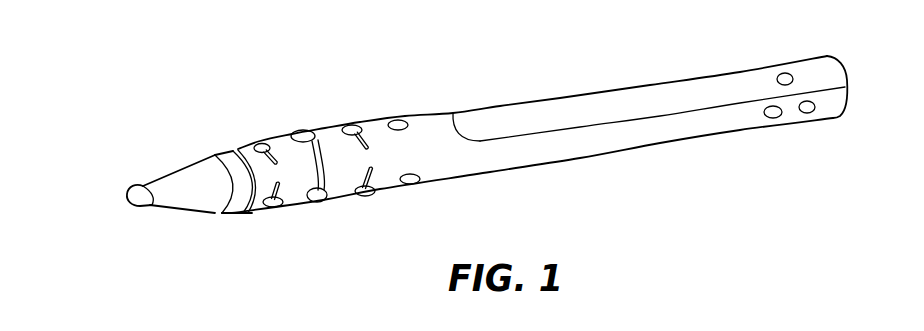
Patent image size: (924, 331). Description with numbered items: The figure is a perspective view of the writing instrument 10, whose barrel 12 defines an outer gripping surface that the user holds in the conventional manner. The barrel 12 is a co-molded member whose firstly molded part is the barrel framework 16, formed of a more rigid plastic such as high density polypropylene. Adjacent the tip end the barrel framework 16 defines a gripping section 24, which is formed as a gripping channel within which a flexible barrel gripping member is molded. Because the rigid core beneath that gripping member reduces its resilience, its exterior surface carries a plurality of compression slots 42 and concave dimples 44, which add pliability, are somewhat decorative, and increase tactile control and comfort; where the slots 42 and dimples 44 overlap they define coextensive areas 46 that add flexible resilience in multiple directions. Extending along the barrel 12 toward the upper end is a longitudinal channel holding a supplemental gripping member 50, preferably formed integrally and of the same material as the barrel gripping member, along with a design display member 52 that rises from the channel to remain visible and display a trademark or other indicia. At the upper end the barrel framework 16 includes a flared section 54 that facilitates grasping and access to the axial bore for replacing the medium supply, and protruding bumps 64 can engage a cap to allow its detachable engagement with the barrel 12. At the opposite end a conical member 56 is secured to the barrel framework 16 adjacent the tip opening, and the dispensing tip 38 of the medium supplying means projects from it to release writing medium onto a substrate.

The writing instrument 10 is at (382, 119).
The barrel 12 is at (466, 175).
The barrel framework 16 is at (688, 93).
The gripping section 24 is at (278, 133).
The dispensing tip 38 is at (138, 198).
The compression slots 42 is at (318, 173).
The concave dimples 44 is at (322, 199).
The coextensive areas 46 is at (329, 192).
The supplemental gripping member 50 is at (708, 127).
The design display member 52 is at (630, 143).
The flared section 54 is at (835, 108).
The conical member 56 is at (188, 175).
The protruding bumps 64 is at (785, 85).